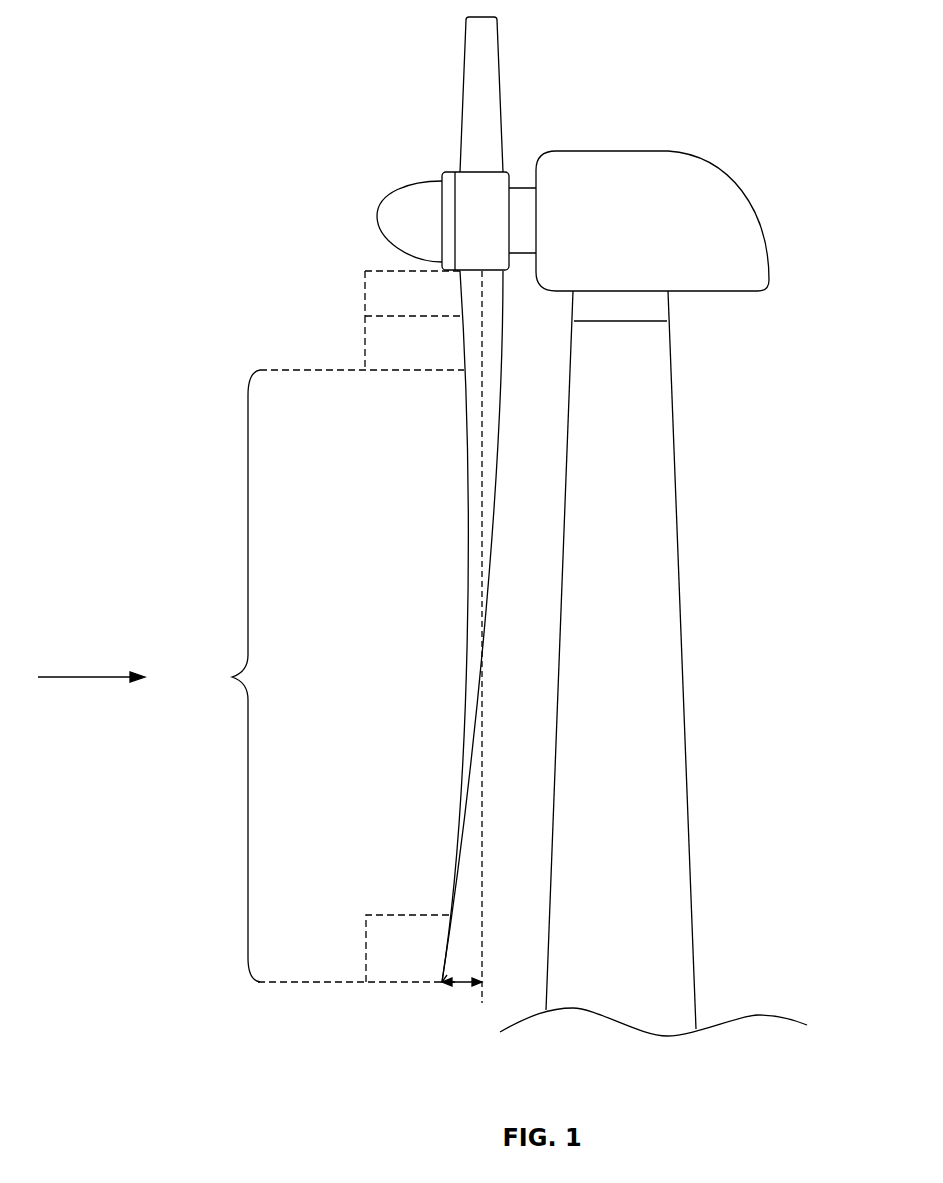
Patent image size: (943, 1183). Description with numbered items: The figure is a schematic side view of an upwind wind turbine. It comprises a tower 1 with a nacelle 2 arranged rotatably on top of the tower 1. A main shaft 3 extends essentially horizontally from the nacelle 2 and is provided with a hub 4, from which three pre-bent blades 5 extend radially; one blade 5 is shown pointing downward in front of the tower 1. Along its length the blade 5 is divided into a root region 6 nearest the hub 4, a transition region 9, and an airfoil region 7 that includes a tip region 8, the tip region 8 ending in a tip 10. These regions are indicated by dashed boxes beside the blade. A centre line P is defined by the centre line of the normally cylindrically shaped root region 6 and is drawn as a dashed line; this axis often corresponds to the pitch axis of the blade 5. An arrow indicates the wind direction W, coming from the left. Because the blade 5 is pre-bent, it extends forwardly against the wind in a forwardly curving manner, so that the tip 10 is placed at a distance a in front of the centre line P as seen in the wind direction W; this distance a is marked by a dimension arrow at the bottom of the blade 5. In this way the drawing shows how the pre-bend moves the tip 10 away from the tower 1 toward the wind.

The tower 1 is at (681, 631).
The nacelle 2 is at (700, 190).
The main shaft 3 is at (520, 200).
The hub 4 is at (475, 197).
The blade 5 is at (462, 752).
The root region 6 is at (365, 293).
The airfoil region 7 is at (232, 677).
The tip region 8 is at (366, 948).
The transition region 9 is at (365, 345).
The tip 10 is at (442, 985).
The centre line p is at (483, 807).
The distance a is at (460, 983).
The wind direction W is at (91, 665).